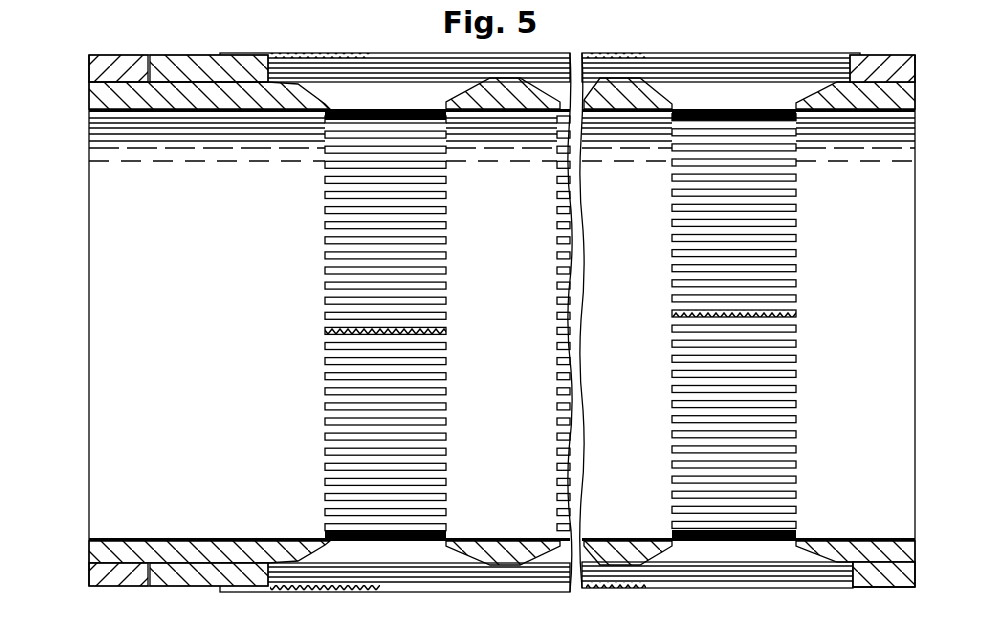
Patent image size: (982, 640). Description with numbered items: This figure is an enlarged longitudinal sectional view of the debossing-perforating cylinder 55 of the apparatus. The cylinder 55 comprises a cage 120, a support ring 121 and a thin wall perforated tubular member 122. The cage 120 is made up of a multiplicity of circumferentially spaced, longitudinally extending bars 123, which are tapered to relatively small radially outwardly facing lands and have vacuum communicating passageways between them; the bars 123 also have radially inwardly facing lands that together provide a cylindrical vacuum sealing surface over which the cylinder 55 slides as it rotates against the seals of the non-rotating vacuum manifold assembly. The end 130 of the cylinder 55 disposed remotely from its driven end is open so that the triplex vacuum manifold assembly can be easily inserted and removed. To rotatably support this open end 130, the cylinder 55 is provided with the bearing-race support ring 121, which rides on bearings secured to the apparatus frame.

The debossing-perforating cylinder 55 is at (222, 601).
The cage 120 is at (166, 548).
The support ring 121 is at (120, 580).
The thin wall perforated tubular member 122 is at (322, 592).
The bars 123 is at (438, 292).
The end 130 is at (88, 173).